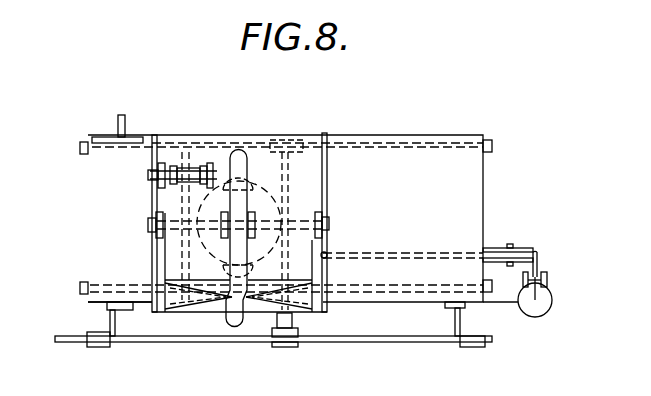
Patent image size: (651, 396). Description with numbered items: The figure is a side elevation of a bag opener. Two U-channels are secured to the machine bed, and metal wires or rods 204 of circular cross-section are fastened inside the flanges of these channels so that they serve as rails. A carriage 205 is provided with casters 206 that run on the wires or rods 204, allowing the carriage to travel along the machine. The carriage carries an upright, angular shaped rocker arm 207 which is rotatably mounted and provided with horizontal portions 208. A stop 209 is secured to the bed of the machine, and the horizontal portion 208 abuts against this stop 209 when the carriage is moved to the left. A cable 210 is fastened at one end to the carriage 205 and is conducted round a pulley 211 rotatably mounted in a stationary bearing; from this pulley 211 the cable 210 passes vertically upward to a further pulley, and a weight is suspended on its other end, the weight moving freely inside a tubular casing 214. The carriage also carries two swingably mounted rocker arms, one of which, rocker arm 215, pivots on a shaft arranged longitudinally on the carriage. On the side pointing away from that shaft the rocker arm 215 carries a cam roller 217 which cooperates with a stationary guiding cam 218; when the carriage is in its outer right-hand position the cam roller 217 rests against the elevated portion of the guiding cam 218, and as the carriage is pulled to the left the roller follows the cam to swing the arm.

The metal wires or rods 204 is at (417, 144).
The carriage 205 is at (257, 140).
The casters 206 is at (302, 142).
The rocker arm 207 is at (170, 182).
The horizontal portions 208 is at (173, 176).
The stop 209 is at (118, 118).
The cable 210 is at (420, 253).
The pulley 211 is at (533, 252).
The tubular casing 214 is at (541, 306).
The rocker arm 215 is at (273, 307).
The cam roller 217 is at (291, 344).
The guiding cam 218 is at (417, 341).